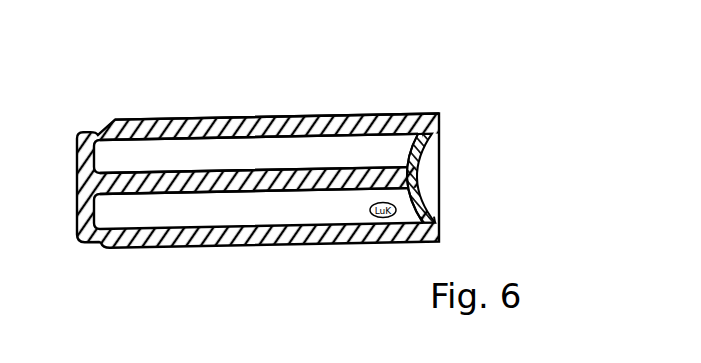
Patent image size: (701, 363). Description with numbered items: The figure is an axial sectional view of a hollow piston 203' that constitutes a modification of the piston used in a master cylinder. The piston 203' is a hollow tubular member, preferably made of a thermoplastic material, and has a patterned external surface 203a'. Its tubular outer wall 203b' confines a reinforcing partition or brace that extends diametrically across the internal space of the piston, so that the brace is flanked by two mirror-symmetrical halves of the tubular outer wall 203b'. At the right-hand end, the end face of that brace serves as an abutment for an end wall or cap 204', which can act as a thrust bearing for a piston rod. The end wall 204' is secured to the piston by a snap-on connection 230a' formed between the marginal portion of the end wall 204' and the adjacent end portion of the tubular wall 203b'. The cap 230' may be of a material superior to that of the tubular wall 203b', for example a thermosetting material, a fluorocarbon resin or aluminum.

The hollow piston 203' is at (258, 142).
The patterned external surface 203a' is at (269, 89).
The tubular outer wall 203b' is at (276, 114).
The end closure cap 230' is at (474, 165).
The end wall or cap 204' is at (474, 178).
The snap-on connection 230a' is at (488, 210).